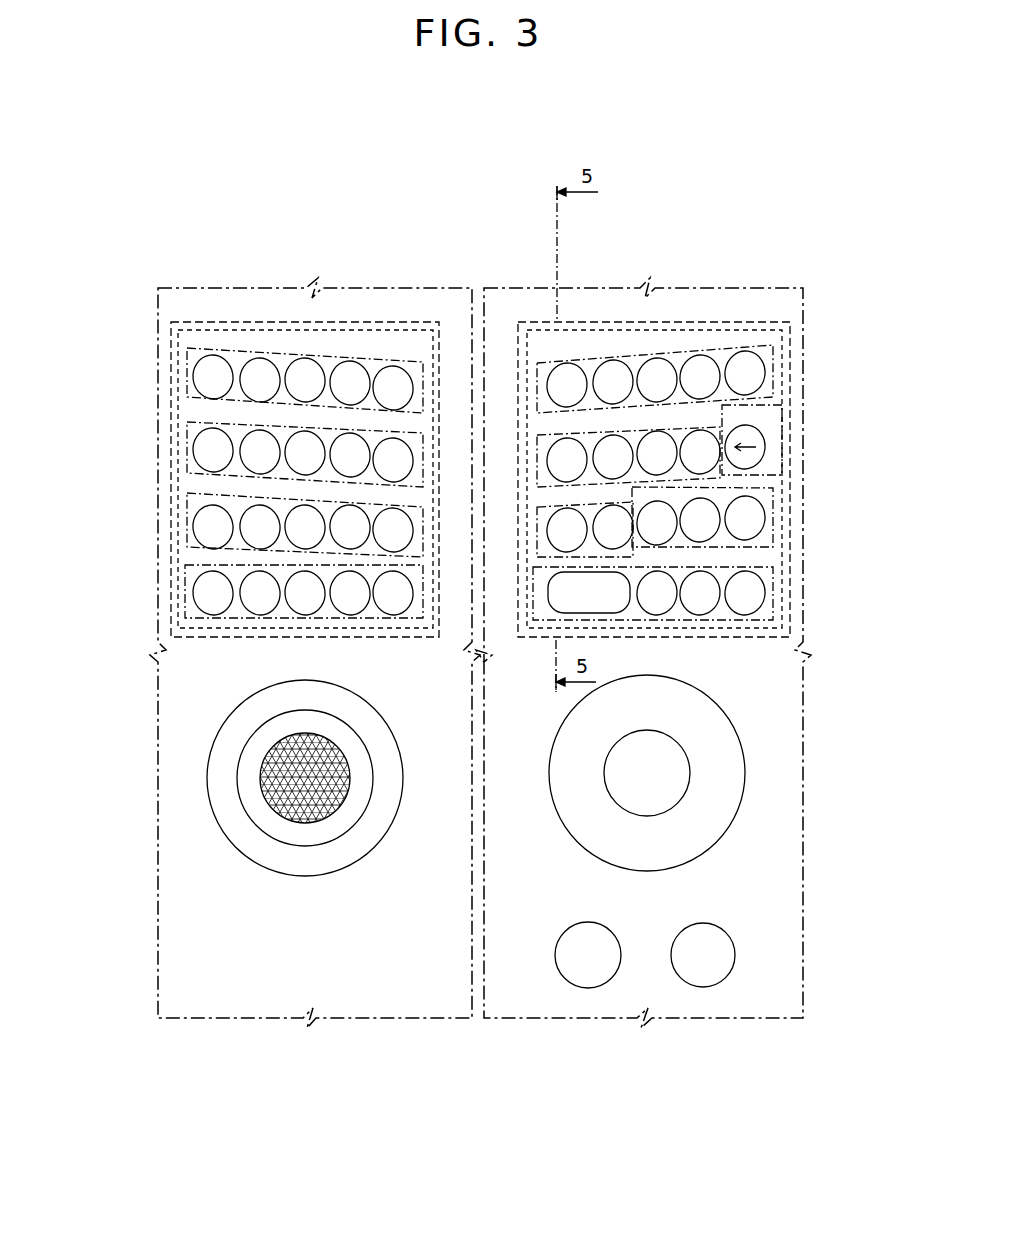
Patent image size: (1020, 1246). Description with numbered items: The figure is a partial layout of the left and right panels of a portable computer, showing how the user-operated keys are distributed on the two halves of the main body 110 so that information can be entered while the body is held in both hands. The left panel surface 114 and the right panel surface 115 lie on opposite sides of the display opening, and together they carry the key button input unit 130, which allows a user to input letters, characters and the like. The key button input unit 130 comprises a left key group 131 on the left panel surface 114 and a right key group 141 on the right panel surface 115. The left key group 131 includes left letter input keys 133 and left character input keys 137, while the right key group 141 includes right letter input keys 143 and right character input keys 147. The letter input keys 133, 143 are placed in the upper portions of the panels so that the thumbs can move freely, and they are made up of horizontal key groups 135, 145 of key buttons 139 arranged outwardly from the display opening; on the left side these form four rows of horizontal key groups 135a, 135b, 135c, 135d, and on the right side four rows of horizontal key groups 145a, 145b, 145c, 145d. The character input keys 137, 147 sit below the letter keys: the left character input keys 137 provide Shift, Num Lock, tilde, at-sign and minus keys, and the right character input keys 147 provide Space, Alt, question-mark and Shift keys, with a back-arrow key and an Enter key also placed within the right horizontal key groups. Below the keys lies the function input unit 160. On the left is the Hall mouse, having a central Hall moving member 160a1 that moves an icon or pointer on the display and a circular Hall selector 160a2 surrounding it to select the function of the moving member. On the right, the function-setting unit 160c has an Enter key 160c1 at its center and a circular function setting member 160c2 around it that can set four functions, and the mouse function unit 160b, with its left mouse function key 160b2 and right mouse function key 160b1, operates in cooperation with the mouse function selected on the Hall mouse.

The main body 110 is at (480, 696).
The left panel surface 114 is at (392, 1020).
The right panel surface 115 is at (643, 679).
The key button input unit 130 is at (220, 237).
The left key group 131 is at (216, 322).
The left letter input keys 133 is at (287, 330).
The horizontal key groups 135 is at (107, 590).
The horizontal key group 135a is at (187, 376).
The horizontal key group 135b is at (187, 450).
The horizontal key group 135c is at (187, 525).
The horizontal key group 135d is at (185, 597).
The left character input keys 137 is at (226, 469).
The key buttons 139 is at (412, 442).
The right key group 141 is at (744, 322).
The right letter input keys 143 is at (592, 330).
The horizontal key groups 145 is at (862, 590).
The horizontal key group 145a is at (773, 376).
The horizontal key group 145b is at (782, 446).
The horizontal key group 145c is at (773, 520).
The horizontal key group 145d is at (773, 597).
The right character input keys 147 is at (713, 468).
The function input unit 160 is at (97, 740).
The Hall moving member 160a1 is at (258, 792).
The Hall selector 160a2 is at (225, 740).
The mouse function unit 160b is at (476, 950).
The right mouse function key 160b1 is at (677, 935).
The left mouse function key 160b2 is at (558, 952).
The function-setting unit 160c is at (476, 798).
The Enter key 160c1 is at (607, 758).
The function setting member 160c2 is at (567, 793).